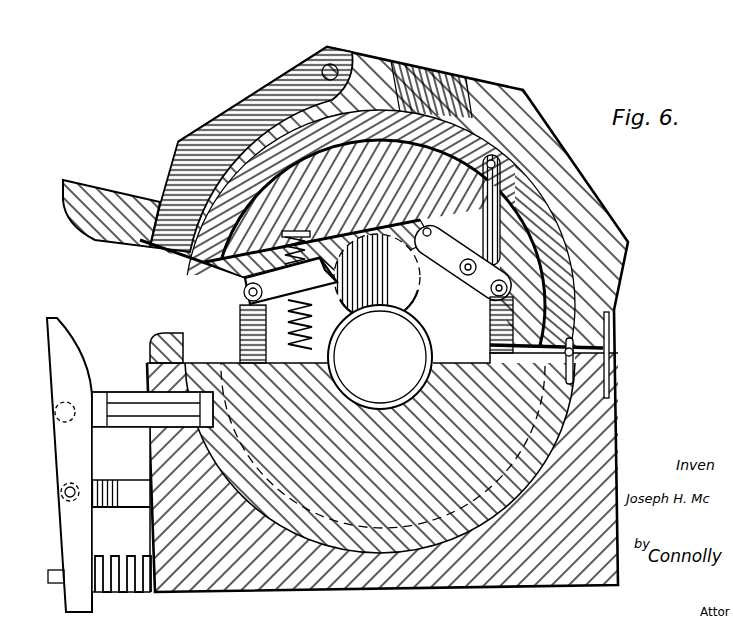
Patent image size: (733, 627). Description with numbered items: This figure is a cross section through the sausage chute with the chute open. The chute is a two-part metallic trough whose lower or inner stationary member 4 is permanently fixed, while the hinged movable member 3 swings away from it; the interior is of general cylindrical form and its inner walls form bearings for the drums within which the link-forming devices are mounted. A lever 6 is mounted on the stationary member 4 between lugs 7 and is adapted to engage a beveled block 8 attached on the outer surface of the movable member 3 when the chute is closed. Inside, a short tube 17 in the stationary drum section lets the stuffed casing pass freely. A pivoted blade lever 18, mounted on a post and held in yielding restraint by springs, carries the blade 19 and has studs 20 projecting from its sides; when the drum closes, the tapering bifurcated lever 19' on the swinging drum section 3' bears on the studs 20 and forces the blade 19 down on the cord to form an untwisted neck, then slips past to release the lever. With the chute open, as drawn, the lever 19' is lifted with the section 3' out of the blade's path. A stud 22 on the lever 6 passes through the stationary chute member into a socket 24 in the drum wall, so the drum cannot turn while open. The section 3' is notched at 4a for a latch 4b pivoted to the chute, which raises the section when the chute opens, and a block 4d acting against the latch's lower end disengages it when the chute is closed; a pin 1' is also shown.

The stationary chute member 4 is at (618, 450).
The hinged movable chute member 3 is at (410, 273).
The swinging drum section 3' is at (366, 250).
The latch 4b is at (213, 130).
The beveled block 8 is at (78, 183).
The notch 4a is at (170, 252).
The blade 19 is at (300, 290).
The stud 20 is at (400, 310).
The blade lever 18 is at (243, 290).
The bifurcated lever 19' is at (534, 254).
The pin 1' is at (608, 355).
The short tube 17 is at (345, 393).
The block 4d is at (166, 340).
The lever 6 is at (58, 458).
The stud 22 is at (118, 393).
The socket 24 is at (165, 432).
The lug 7 is at (133, 500).